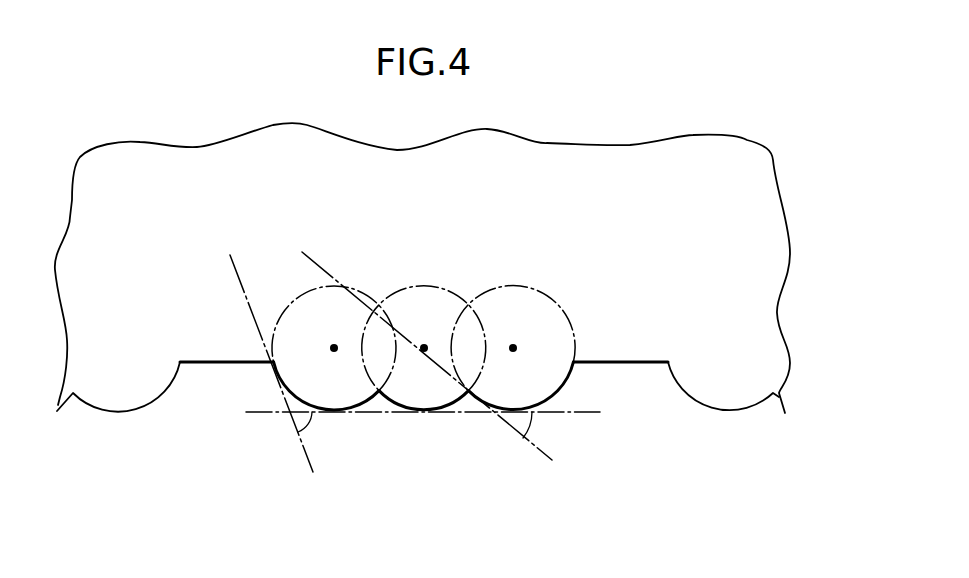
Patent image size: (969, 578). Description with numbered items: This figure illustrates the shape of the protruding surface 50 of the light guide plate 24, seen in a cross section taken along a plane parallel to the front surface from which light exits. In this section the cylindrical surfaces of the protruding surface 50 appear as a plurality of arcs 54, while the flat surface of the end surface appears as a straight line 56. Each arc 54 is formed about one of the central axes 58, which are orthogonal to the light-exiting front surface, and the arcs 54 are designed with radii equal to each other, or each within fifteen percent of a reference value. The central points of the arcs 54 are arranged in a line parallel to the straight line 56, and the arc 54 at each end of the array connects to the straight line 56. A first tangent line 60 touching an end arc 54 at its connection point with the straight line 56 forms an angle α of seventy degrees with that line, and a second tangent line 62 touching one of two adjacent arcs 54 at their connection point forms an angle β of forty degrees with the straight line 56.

The light guide plate 24 is at (703, 155).
The protruding surface 50 is at (458, 420).
The arcs 54 is at (348, 413).
The straight line 56 is at (223, 363).
The central axes 58 is at (334, 347).
The first tangent line 60 is at (305, 457).
The second tangent line 62 is at (537, 455).